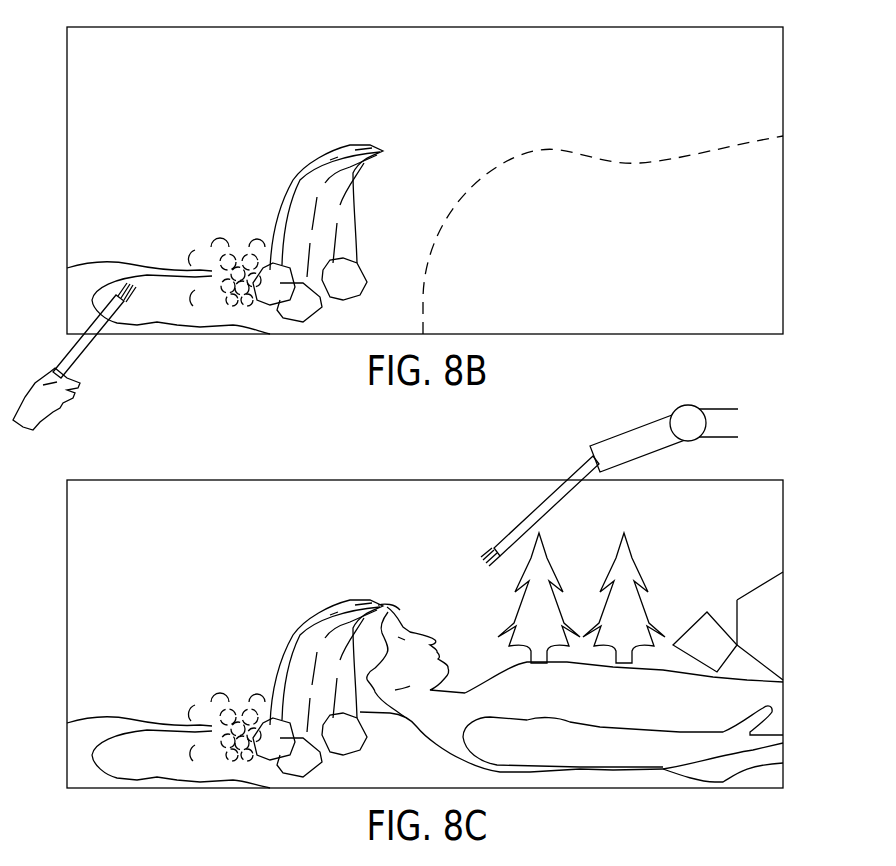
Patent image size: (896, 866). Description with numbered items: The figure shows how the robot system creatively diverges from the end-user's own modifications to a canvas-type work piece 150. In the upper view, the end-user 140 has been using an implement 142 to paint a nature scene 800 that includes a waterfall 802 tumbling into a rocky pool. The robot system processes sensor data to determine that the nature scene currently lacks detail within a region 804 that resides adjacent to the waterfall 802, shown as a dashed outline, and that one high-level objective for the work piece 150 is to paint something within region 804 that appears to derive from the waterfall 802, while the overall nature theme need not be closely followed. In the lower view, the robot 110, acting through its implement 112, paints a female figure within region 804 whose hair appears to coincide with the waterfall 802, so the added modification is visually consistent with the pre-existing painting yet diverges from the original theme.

In FIG. 8C, the robot 110 is at (717, 407).
In FIG. 8C, the implement 112 is at (576, 470).
In FIG. 8B, the end-user 140 is at (30, 400).
In FIG. 8B, the implement 142 is at (82, 362).
In FIG. 8B, the work piece 150 is at (762, 86).
In FIG. 8C, the work piece 150 is at (762, 540).
In FIG. 8B, the nature scene 800 is at (158, 138).
In FIG. 8C, the nature scene 800 is at (158, 593).
In FIG. 8B, the waterfall 802 is at (303, 170).
In FIG. 8C, the waterfall 802 is at (384, 605).
In FIG. 8B, the region 804 is at (537, 147).
In FIG. 8C, the region 804 is at (652, 560).